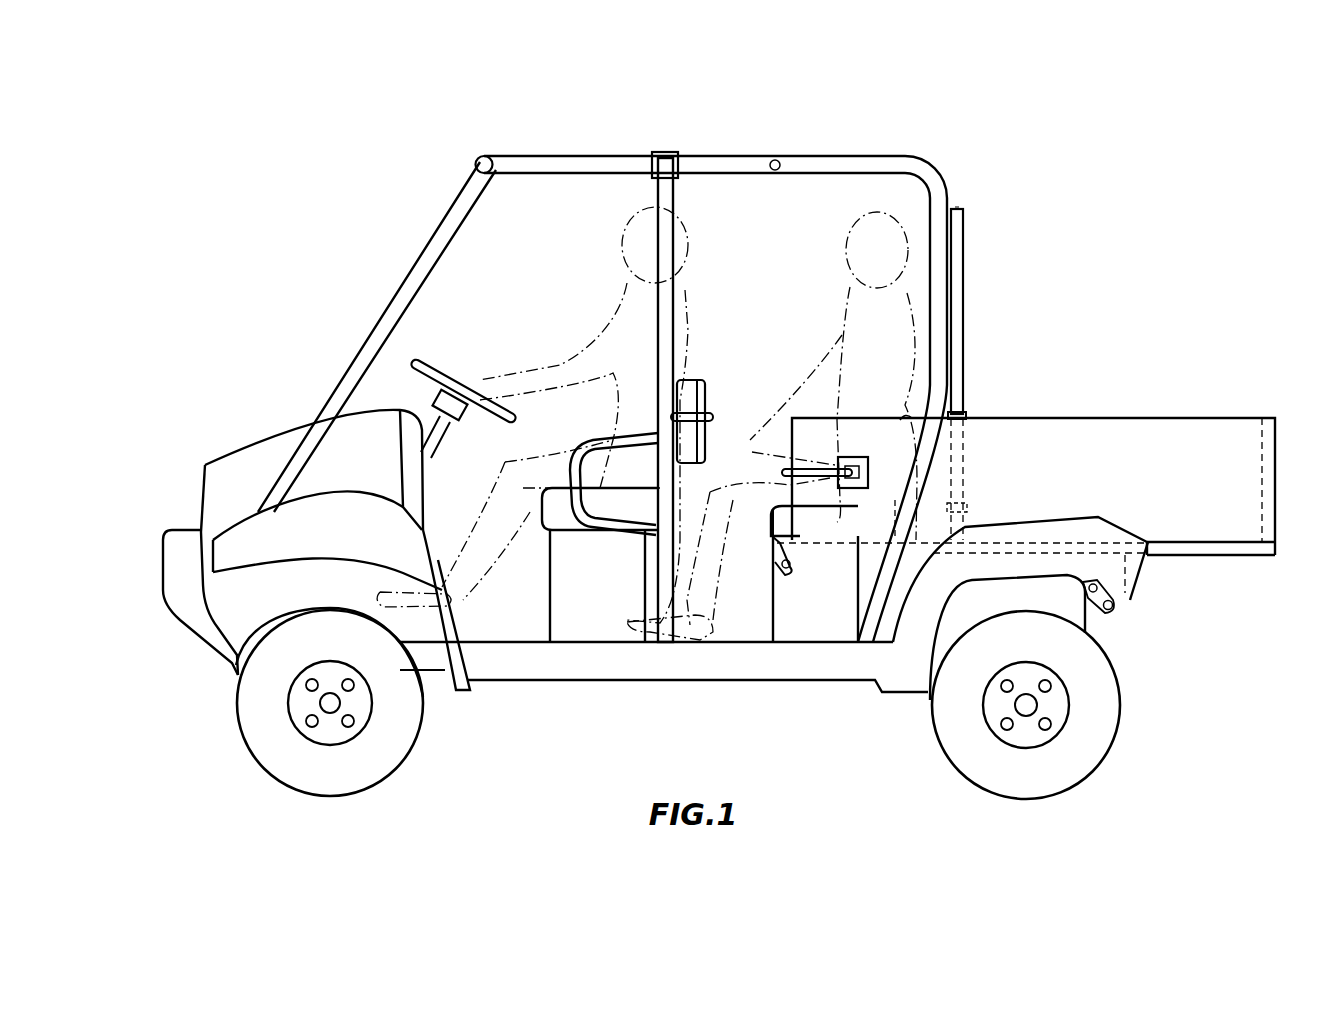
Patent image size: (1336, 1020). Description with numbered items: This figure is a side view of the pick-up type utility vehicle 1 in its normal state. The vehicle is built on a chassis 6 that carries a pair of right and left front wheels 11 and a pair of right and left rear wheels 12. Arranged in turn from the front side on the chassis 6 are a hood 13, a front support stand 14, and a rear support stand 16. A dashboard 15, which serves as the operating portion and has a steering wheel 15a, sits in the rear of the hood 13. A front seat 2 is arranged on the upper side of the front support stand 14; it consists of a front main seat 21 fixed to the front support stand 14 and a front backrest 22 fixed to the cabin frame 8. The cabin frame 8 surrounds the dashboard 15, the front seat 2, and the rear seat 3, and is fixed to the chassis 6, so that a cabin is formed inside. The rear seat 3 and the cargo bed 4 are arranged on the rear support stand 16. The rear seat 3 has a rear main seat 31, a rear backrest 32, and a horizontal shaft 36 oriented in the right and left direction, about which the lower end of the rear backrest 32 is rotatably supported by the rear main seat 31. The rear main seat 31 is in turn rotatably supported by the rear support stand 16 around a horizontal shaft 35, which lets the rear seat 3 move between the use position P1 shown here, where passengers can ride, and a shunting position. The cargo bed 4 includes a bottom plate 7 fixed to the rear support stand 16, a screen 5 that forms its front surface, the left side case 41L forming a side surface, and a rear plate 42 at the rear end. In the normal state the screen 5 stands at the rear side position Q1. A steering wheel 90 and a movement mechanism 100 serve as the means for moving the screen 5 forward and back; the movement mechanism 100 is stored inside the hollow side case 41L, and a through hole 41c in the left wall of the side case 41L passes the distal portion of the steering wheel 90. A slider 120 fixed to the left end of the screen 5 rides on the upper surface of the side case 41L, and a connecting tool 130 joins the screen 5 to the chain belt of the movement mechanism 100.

The pick-up type utility vehicle 1 is at (595, 391).
The front seat 2 is at (566, 508).
The rear seat 3 is at (793, 527).
The cargo bed 4 is at (1026, 446).
The screen 5 is at (960, 327).
The chassis 6 is at (708, 677).
The bottom plate 7 is at (1180, 547).
The cabin frame 8 is at (710, 150).
The front wheels 11 is at (247, 722).
The rear wheels 12 is at (1118, 717).
The hood 13 is at (270, 440).
The front support stand 14 is at (555, 592).
The dashboard 15 is at (417, 420).
The steering wheel 15a is at (447, 378).
The rear support stand 16 is at (770, 620).
The front main seat 21 is at (548, 510).
The front backrest 22 is at (694, 362).
The rear main seat 31 is at (780, 505).
The rear backrest 32 is at (907, 405).
The horizontal shaft 35 is at (774, 590).
The horizontal shaft 36 is at (953, 502).
The side case 41L is at (1033, 433).
The through hole 41c is at (815, 589).
The rear plate 42 is at (1262, 457).
The steering wheel 90 is at (835, 468).
The movement mechanism 100 is at (1157, 470).
The slider 120 is at (957, 410).
The connecting tool 130 is at (967, 505).
The use position P1 is at (810, 356).
The rear side position Q1 is at (960, 186).